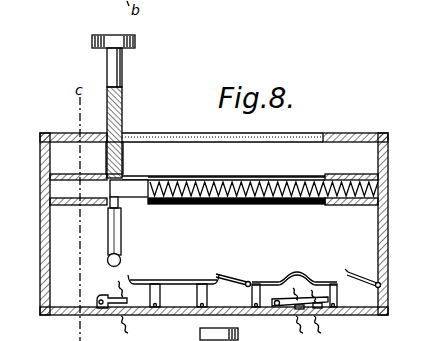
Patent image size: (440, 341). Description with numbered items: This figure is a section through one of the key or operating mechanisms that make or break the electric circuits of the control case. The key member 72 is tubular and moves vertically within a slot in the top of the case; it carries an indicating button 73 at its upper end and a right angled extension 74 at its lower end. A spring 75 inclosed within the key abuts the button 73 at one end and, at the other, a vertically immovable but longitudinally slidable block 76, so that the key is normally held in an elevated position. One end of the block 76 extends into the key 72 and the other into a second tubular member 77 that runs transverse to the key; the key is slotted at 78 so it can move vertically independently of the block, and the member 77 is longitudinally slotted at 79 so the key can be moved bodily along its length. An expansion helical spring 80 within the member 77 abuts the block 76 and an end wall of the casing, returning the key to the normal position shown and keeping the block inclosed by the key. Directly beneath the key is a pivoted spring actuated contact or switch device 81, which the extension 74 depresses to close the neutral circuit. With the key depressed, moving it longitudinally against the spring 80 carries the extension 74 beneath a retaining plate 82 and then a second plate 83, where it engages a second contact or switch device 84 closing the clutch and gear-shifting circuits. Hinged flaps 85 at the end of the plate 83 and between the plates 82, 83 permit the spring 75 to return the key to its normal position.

The key member 72 is at (115, 72).
The indicating button 73 is at (136, 40).
The right angled extension 74 is at (121, 262).
The spring 75 is at (123, 110).
The block 76 is at (137, 188).
The second tubular member 77 is at (332, 174).
The slot 78 is at (124, 158).
The longitudinal slot 79 is at (279, 176).
The expansion helical spring 80 is at (248, 176).
The contact or switch device 81 is at (108, 296).
The retaining plate 82 is at (175, 282).
The second plate 83 is at (268, 283).
The second contact or switch device 84 is at (303, 298).
The hinged flaps 85 is at (222, 275).